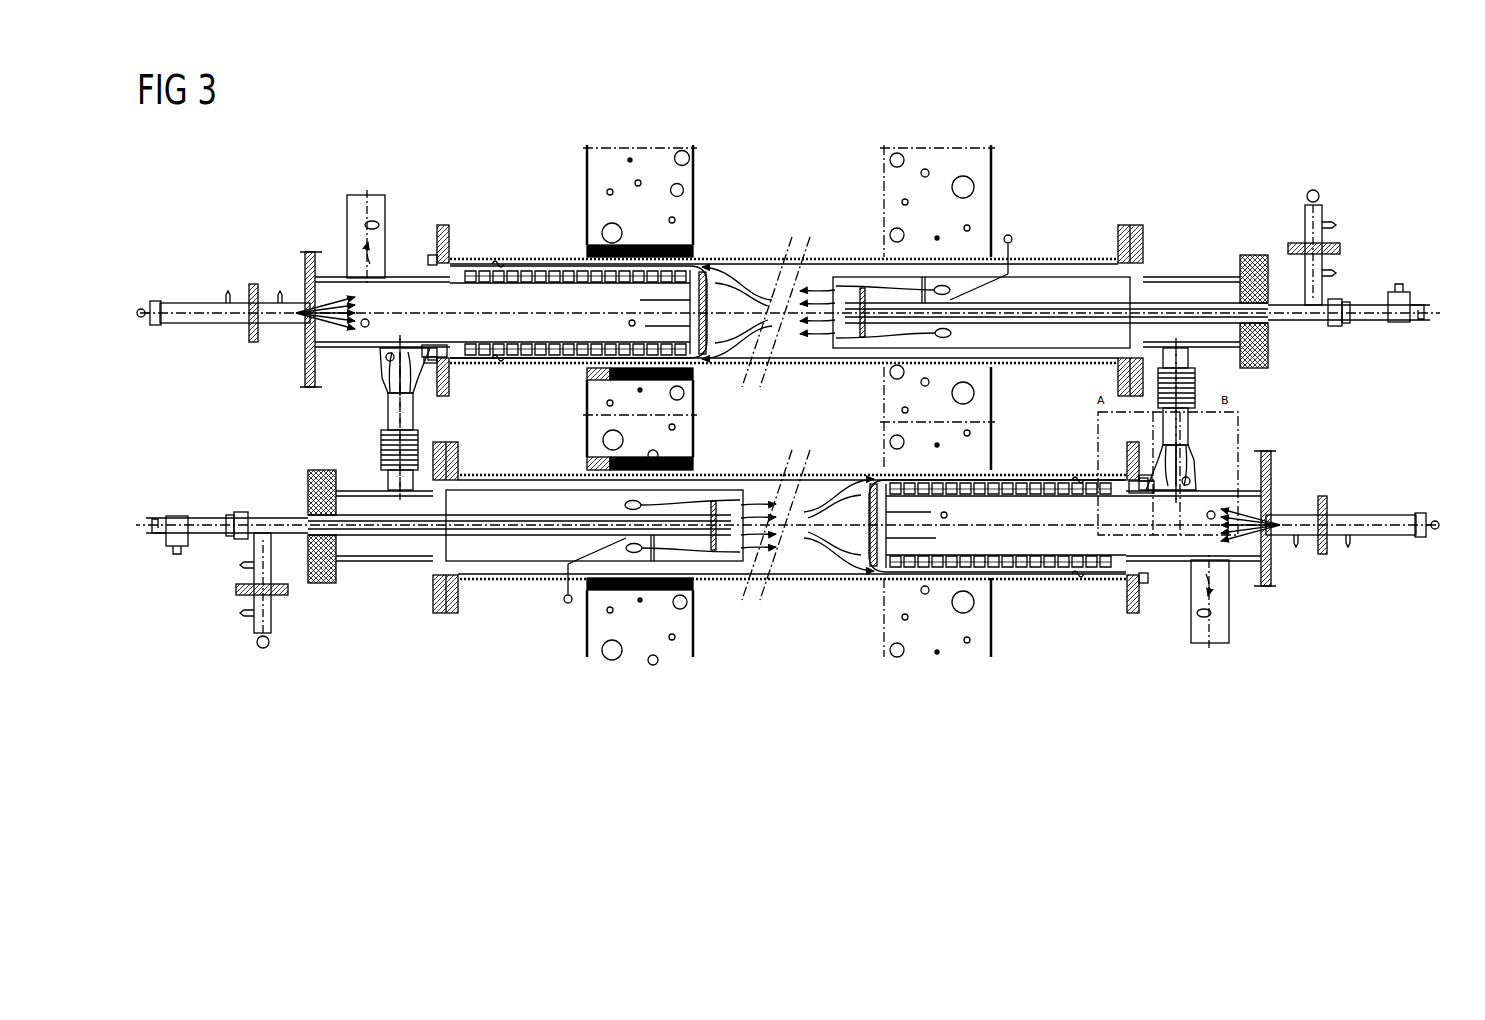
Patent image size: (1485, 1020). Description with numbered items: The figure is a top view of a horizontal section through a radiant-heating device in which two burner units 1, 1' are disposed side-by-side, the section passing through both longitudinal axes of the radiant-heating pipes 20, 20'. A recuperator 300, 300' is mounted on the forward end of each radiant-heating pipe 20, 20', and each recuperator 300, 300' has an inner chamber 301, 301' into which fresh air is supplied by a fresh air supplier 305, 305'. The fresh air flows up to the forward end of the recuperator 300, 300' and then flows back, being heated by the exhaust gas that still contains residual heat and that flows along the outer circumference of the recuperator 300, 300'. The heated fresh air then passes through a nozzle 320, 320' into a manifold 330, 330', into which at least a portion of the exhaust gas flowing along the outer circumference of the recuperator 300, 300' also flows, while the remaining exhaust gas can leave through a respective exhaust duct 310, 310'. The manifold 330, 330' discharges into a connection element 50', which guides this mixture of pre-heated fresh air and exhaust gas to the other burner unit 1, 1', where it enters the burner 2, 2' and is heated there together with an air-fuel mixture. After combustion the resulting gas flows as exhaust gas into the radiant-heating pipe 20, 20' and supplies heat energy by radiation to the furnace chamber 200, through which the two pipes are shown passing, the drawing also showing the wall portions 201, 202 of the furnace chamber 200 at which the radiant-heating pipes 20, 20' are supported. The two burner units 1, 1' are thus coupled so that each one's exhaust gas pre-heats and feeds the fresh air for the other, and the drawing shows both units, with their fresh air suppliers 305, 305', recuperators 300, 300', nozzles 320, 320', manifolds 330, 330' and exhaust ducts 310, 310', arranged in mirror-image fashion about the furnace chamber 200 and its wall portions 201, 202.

The burner unit 1 is at (790, 263).
The burner unit 1' is at (786, 563).
The burner 2 is at (1205, 284).
The burner 2' is at (370, 545).
The radiant-heating pipe 20 is at (1050, 271).
The radiant-heating pipe 20' is at (579, 565).
The furnace chamber 200 is at (786, 226).
The support block 201 is at (946, 147).
The support block 202 is at (648, 147).
The recuperator 300 is at (575, 276).
The recuperator 300' is at (1000, 558).
The inner chamber 301 is at (550, 271).
The inner chamber 301' is at (1032, 564).
The fresh air supplier 305 is at (223, 291).
The fresh air supplier 305' is at (1352, 545).
The exhaust duct 310 is at (364, 208).
The exhaust duct 310' is at (1219, 625).
The nozzle 320 is at (359, 382).
The nozzle 320' is at (1221, 450).
The manifold 330 is at (376, 417).
The manifold 330' is at (1235, 420).
The connection element 50' is at (806, 419).